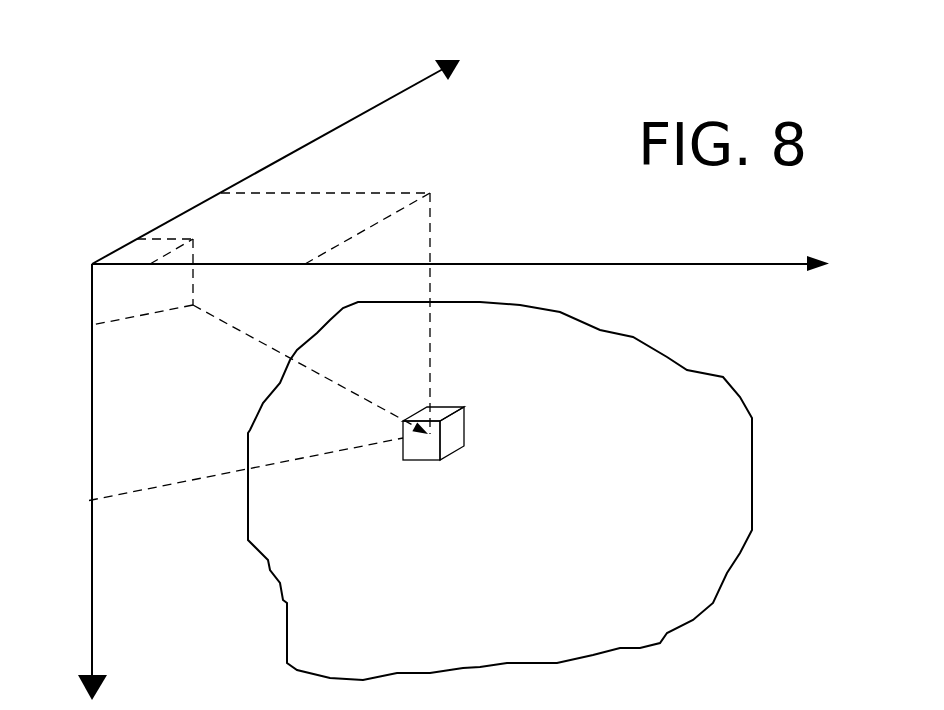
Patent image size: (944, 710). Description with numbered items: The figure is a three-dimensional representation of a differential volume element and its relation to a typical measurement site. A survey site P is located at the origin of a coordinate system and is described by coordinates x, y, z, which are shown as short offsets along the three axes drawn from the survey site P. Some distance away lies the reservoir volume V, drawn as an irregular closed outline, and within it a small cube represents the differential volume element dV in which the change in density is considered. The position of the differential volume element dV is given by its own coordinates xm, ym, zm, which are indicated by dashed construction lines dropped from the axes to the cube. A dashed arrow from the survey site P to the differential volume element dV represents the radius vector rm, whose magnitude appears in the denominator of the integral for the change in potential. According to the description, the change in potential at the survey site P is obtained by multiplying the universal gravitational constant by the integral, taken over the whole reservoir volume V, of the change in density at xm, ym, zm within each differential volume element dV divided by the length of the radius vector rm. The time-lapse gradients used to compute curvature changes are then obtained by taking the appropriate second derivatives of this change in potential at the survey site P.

The survey site P is at (435, 380).
The x coordinate of survey site x is at (142, 238).
The y coordinate of survey site y is at (152, 265).
The z coordinate of survey site z is at (132, 285).
The x coordinate of volume element xm is at (304, 176).
The y coordinate of volume element ym is at (350, 313).
The z coordinate of volume element zm is at (216, 485).
The radius vector rm is at (310, 369).
The differential volume element dV is at (459, 439).
The reservoir volume V is at (529, 491).